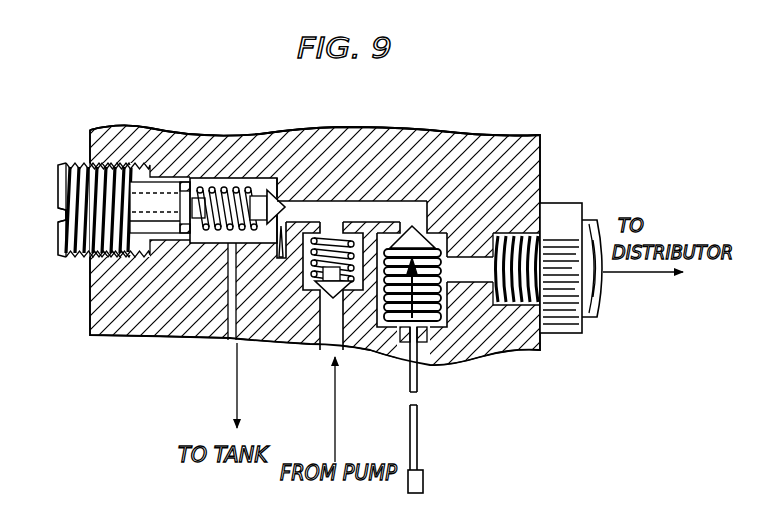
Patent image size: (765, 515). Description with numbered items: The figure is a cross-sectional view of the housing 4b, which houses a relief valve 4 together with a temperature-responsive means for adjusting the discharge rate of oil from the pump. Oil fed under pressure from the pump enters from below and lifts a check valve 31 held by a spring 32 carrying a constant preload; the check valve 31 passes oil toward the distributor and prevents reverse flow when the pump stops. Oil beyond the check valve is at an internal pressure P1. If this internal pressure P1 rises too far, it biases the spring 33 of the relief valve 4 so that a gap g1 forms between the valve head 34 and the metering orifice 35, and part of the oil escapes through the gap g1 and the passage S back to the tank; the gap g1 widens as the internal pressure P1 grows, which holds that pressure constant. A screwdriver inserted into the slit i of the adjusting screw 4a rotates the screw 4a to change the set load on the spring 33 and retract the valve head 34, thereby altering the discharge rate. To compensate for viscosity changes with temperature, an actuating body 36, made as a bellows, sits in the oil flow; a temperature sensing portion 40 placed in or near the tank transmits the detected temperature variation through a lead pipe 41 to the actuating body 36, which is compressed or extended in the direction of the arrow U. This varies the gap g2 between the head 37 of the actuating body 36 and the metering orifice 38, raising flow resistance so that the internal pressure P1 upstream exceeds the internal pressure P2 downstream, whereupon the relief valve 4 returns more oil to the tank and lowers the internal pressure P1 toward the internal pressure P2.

The relief valve 4 is at (181, 166).
The adjusting screw 4a is at (80, 163).
The housing 4b is at (152, 136).
The slit i is at (60, 213).
The spring 33 is at (228, 190).
The valve head 34 is at (262, 188).
The gap g1 is at (287, 200).
The internal pressure P1 is at (352, 212).
The gap g2 is at (392, 200).
The metering orifice 35 is at (281, 258).
The spring 32 is at (303, 285).
The check valve 31 is at (328, 309).
The passage S is at (232, 342).
The head 37 is at (445, 235).
The metering orifice 38 is at (418, 230).
The arrow U is at (440, 302).
The actuating body 36 is at (448, 320).
The lead pipe 41 is at (417, 418).
The temperature sensing portion 40 is at (423, 477).
The internal pressure P2 is at (477, 266).